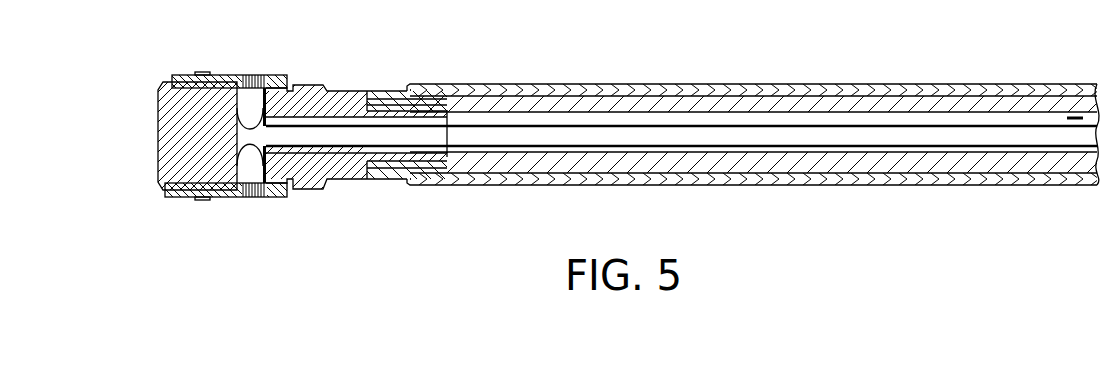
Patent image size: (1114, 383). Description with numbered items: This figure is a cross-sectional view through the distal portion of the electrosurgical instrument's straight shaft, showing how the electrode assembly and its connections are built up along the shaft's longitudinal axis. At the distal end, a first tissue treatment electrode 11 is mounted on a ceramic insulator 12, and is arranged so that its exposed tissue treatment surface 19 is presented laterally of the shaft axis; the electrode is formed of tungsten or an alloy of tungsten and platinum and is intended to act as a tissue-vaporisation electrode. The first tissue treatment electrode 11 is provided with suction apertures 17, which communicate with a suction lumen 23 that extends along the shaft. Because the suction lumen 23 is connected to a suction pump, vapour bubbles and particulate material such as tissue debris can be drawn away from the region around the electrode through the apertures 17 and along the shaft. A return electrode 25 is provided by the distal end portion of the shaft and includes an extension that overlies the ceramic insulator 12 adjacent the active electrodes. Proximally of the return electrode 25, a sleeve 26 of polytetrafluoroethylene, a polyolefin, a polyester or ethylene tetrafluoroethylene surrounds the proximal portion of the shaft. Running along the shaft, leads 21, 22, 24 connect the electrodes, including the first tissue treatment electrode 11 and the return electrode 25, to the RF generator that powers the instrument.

The first tissue treatment electrode 11 is at (179, 72).
The ceramic insulator 12 is at (307, 191).
The suction apertures 17 is at (267, 74).
The tissue treatment surface 19 is at (228, 74).
The lead 21 is at (641, 125).
The lead 22 is at (992, 148).
The suction lumen 23 is at (846, 138).
The lead 24 is at (1003, 92).
The return electrode 25 is at (366, 91).
The sleeve 26 is at (707, 186).